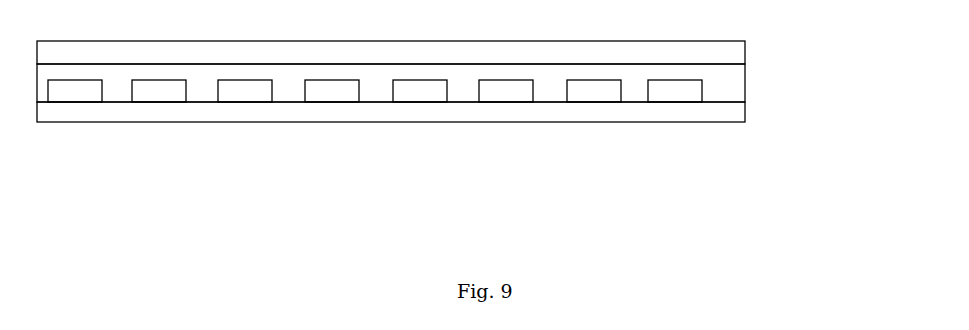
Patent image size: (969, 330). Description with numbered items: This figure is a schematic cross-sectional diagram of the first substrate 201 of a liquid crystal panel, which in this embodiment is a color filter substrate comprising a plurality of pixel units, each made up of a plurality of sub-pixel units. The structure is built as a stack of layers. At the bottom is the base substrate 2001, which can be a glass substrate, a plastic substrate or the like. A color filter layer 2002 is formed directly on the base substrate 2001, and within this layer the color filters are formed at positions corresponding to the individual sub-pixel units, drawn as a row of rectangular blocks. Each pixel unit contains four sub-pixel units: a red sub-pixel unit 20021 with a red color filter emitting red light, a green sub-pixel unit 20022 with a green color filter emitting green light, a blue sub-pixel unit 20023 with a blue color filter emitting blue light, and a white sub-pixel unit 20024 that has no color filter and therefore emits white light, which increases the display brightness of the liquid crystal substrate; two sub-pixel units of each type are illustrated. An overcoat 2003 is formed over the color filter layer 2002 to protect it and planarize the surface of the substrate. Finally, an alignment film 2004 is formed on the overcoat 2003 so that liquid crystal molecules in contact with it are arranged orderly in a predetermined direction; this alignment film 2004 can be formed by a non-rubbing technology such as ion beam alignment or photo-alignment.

The first substrate 201 is at (449, 116).
The base substrate 2001 is at (738, 116).
The color filter layer 2002 is at (431, 119).
The overcoat 2003 is at (733, 68).
The alignment film 2004 is at (733, 47).
The red sub-pixel unit 20021 is at (67, 93).
The green sub-pixel unit 20022 is at (152, 93).
The blue sub-pixel unit 20023 is at (243, 93).
The white sub-pixel unit 20024 is at (335, 93).